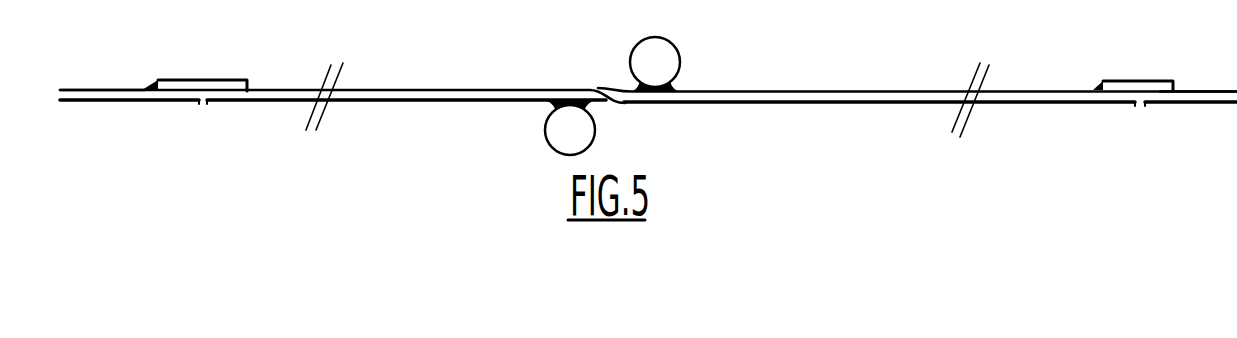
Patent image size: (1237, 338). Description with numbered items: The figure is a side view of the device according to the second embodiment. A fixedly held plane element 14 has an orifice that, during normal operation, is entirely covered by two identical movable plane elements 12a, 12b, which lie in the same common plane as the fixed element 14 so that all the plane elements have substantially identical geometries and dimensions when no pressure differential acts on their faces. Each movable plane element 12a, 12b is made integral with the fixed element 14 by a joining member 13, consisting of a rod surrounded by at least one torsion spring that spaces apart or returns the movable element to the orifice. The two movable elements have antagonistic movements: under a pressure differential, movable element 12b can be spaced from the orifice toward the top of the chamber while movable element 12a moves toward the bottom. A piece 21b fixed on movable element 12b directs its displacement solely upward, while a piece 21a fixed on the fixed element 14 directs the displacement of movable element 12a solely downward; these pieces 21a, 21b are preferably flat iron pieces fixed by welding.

The movable plane element 12a is at (384, 87).
The movable plane element 12b is at (800, 88).
The joining member 13 is at (662, 66).
The fixedly held plane element 14 is at (1236, 58).
The piece 21a is at (221, 78).
The piece 21b is at (1156, 79).